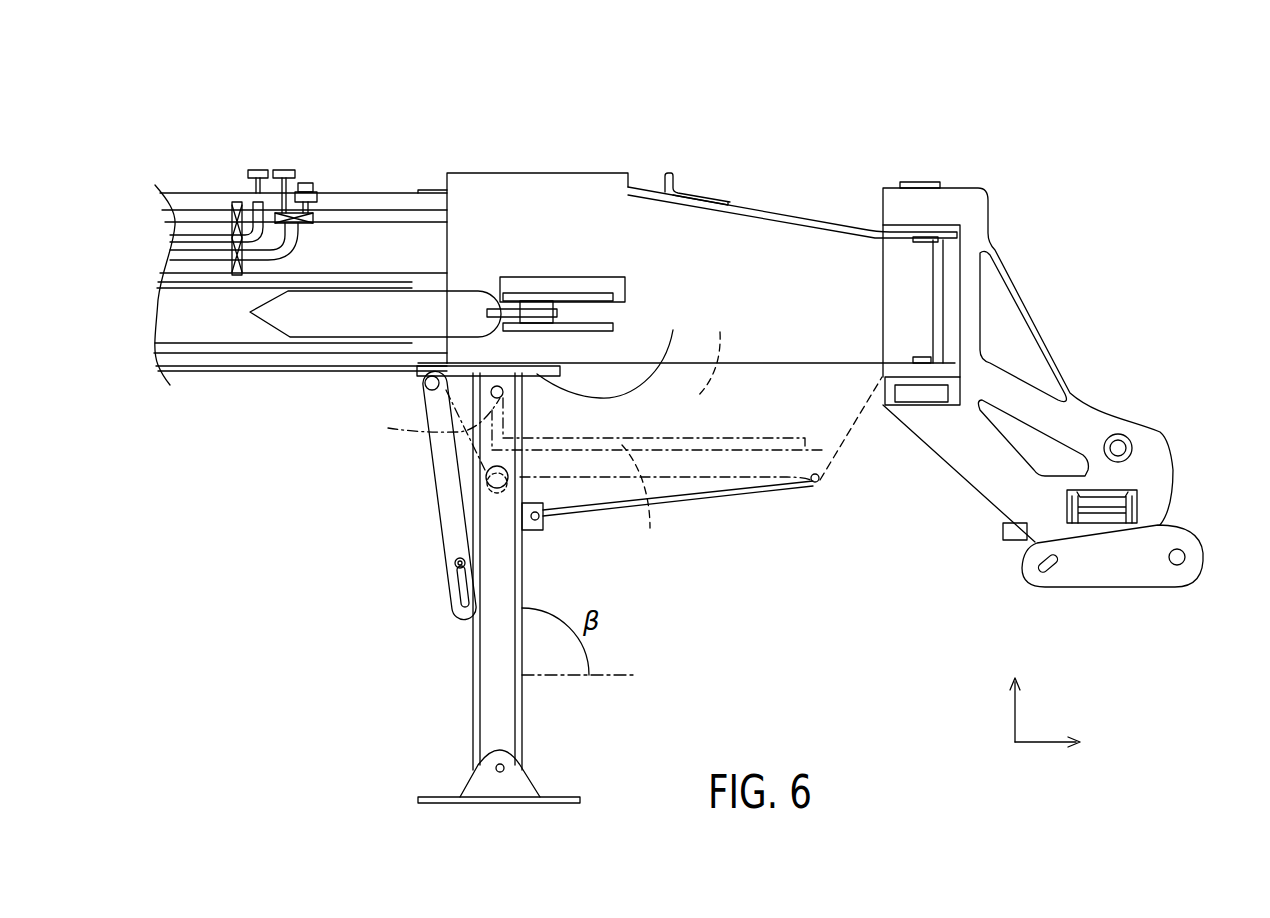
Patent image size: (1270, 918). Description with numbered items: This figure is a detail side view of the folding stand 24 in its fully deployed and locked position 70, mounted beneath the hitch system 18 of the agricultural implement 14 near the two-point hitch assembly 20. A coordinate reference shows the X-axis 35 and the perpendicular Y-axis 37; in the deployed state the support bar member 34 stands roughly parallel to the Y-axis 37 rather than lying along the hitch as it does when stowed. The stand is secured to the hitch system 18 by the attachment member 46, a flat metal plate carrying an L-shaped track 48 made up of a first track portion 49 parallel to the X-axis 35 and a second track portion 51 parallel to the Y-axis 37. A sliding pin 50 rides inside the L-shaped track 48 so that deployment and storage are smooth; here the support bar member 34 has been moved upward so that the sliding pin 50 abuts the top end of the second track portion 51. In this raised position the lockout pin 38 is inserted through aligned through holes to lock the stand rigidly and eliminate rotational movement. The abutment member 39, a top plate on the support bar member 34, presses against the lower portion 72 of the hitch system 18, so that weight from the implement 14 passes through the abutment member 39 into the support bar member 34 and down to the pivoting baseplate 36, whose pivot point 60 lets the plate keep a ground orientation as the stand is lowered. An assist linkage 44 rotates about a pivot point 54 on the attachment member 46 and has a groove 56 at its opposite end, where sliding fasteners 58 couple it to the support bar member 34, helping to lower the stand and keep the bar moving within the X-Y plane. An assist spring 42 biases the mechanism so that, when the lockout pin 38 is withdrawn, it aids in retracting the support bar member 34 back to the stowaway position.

The agricultural implement 14 is at (290, 155).
The hitch system 18 is at (687, 227).
The two-point hitch assembly 20 is at (1100, 385).
The folding stand 24 is at (698, 558).
The support bar member 34 is at (500, 578).
The X-axis 35 is at (1042, 743).
The pivoting baseplate 36 is at (524, 783).
The Y-axis 37 is at (1015, 717).
The lockout pin 38 is at (487, 481).
The abutment member 39 is at (612, 351).
The assist spring 42 is at (683, 508).
The assist linkage 44 is at (432, 445).
The attachment member 46 is at (712, 350).
The L-shaped track 48 is at (822, 449).
The first track portion 49 is at (641, 504).
The sliding pin 50 is at (491, 395).
The second track portion 51 is at (593, 430).
The pivot point 54 is at (425, 385).
The groove 56 is at (460, 605).
The sliding fasteners 58 is at (455, 566).
The pivot point 60 is at (505, 765).
The fully deployed and locked position 70 is at (758, 635).
The lower portion 72 is at (583, 377).